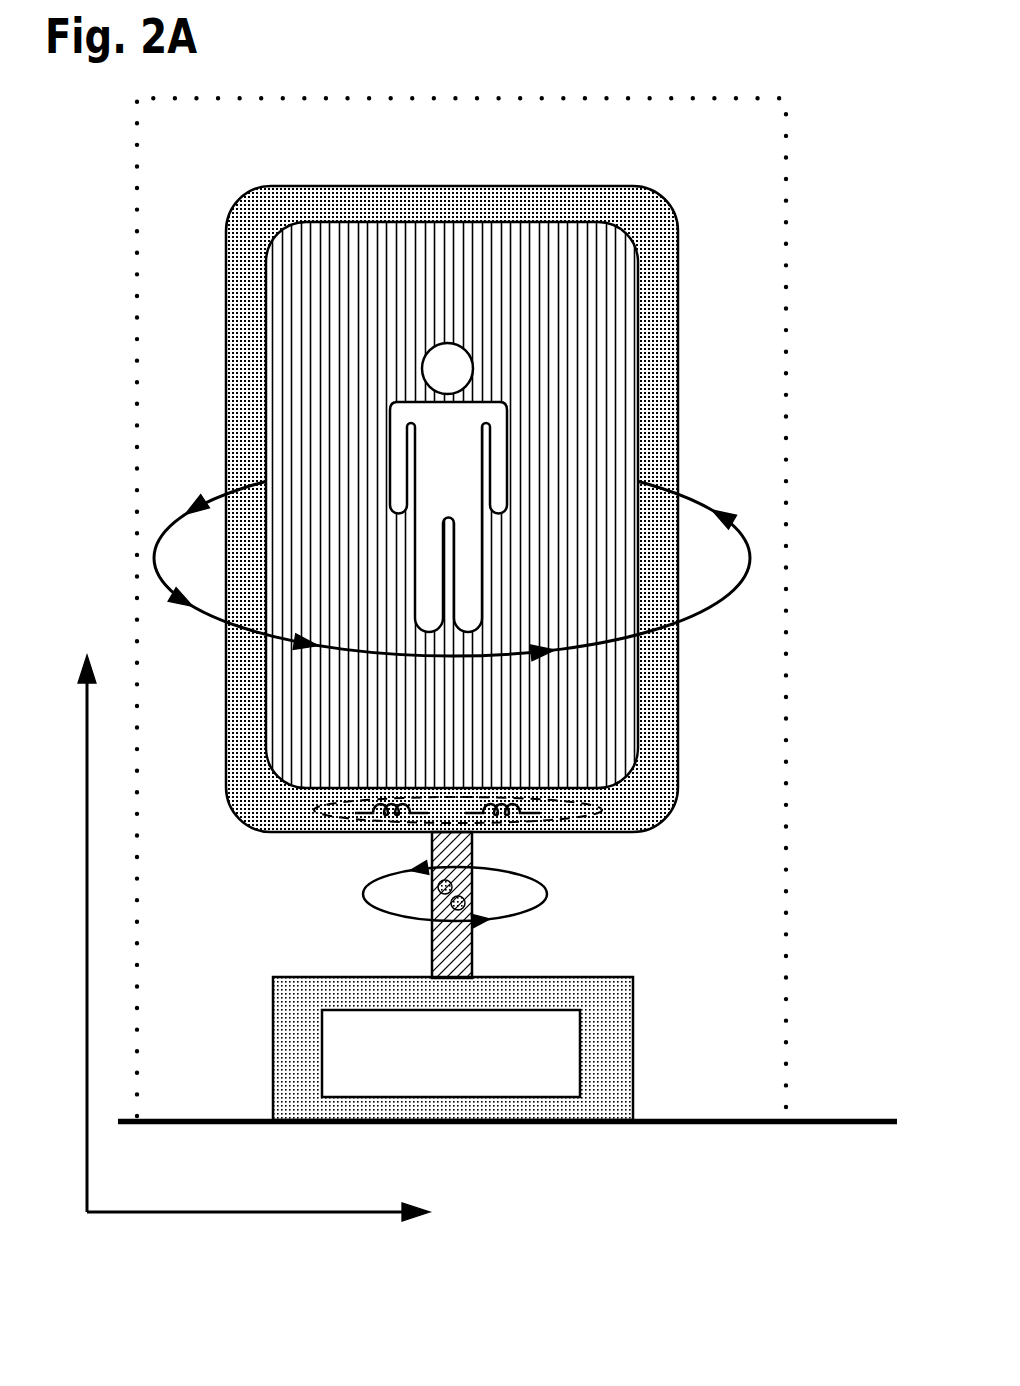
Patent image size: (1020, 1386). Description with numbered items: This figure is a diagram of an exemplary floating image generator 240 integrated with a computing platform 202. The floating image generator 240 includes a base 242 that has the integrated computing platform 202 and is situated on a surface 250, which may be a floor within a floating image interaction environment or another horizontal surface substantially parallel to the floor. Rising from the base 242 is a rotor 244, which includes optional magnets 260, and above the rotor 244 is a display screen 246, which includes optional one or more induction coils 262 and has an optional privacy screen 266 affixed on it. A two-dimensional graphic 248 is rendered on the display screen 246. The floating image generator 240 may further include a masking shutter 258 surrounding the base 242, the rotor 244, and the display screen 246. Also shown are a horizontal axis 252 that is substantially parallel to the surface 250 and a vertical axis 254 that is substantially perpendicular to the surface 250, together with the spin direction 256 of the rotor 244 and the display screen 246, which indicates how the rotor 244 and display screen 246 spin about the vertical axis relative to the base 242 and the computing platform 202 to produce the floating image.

The floating image generator 240 is at (848, 82).
The base 242 is at (634, 1027).
The rotor 244 is at (432, 962).
The display screen 246 is at (604, 186).
The 2D graphic 248 is at (495, 383).
The surface 250 is at (822, 1118).
The horizontal axis 252 is at (250, 1210).
The vertical axis 254 is at (85, 850).
The spin direction 256 is at (737, 590).
The masking shutter 258 is at (787, 437).
The magnets 260 is at (439, 888).
The induction coils 262 is at (312, 812).
The privacy screen 266 is at (479, 289).
The computing platform 202 is at (468, 1079).